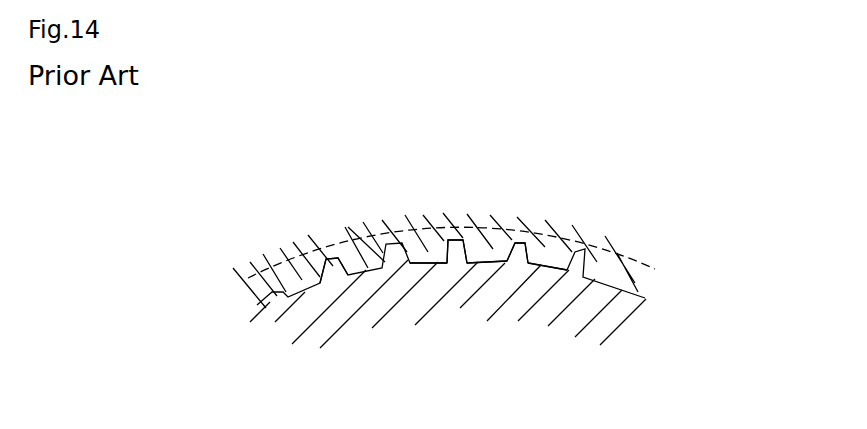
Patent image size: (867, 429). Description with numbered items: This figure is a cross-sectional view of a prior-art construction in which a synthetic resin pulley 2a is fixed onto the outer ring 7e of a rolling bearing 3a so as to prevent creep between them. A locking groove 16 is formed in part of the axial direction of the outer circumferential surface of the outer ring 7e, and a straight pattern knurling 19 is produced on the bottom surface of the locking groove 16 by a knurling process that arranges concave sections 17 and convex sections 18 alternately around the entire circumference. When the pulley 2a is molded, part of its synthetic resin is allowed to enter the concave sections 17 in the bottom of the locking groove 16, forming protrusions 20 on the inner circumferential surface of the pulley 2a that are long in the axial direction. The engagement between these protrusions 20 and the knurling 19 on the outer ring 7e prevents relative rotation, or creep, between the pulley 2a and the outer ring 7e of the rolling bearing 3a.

The locking groove 16 is at (267, 307).
The convex section 18 is at (335, 257).
The protrusion 20 is at (407, 248).
The concave section 17 is at (514, 262).
The pulley 2a is at (270, 268).
The straight pattern knurling 19 is at (632, 249).
The rolling bearing 3a is at (660, 313).
The outer ring 7e is at (653, 340).